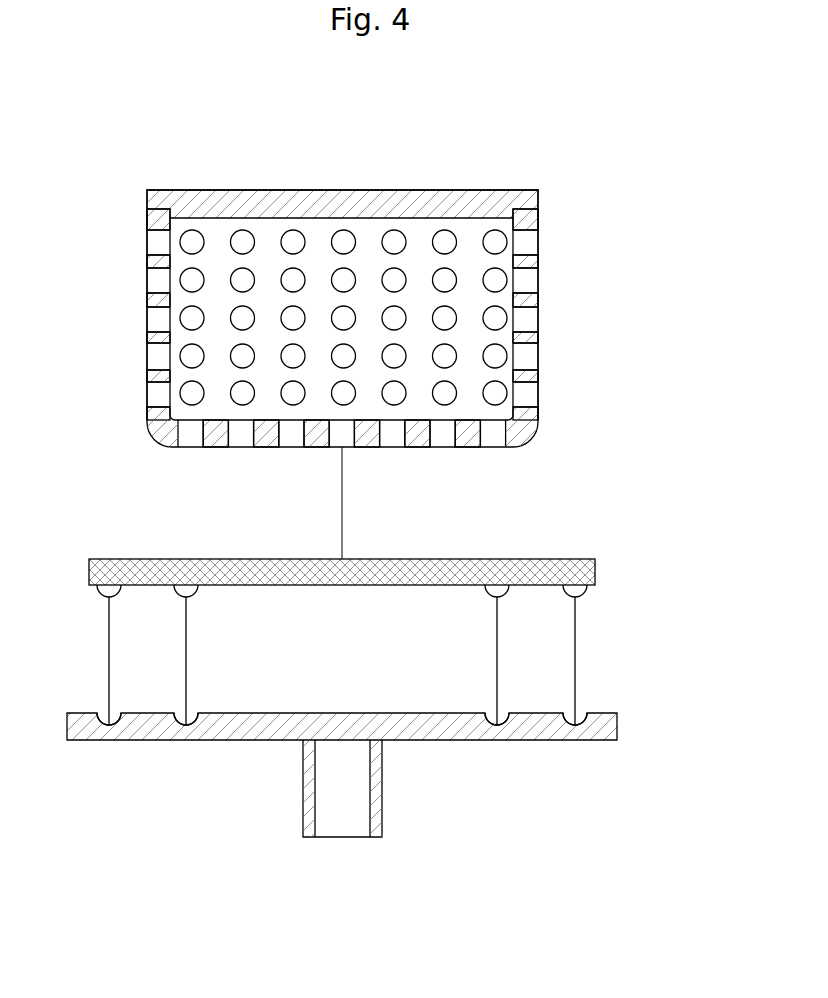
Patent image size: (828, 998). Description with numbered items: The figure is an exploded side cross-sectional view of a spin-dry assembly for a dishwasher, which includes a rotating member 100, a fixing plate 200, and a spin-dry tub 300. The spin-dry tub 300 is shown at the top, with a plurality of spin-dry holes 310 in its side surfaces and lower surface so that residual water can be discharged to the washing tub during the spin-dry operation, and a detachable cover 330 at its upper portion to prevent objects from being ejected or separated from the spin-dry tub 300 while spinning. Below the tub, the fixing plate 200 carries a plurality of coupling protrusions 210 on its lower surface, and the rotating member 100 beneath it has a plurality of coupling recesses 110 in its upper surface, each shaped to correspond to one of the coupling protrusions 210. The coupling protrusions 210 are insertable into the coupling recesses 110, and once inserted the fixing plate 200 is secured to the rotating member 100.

The rotating member 100 is at (356, 746).
The coupling recesses 110 is at (578, 712).
The fixing plate 200 is at (387, 591).
The coupling protrusions 210 is at (581, 590).
The spin-dry tub 300 is at (371, 318).
The spin-dry holes 310 is at (450, 240).
The detachable cover 330 is at (331, 202).